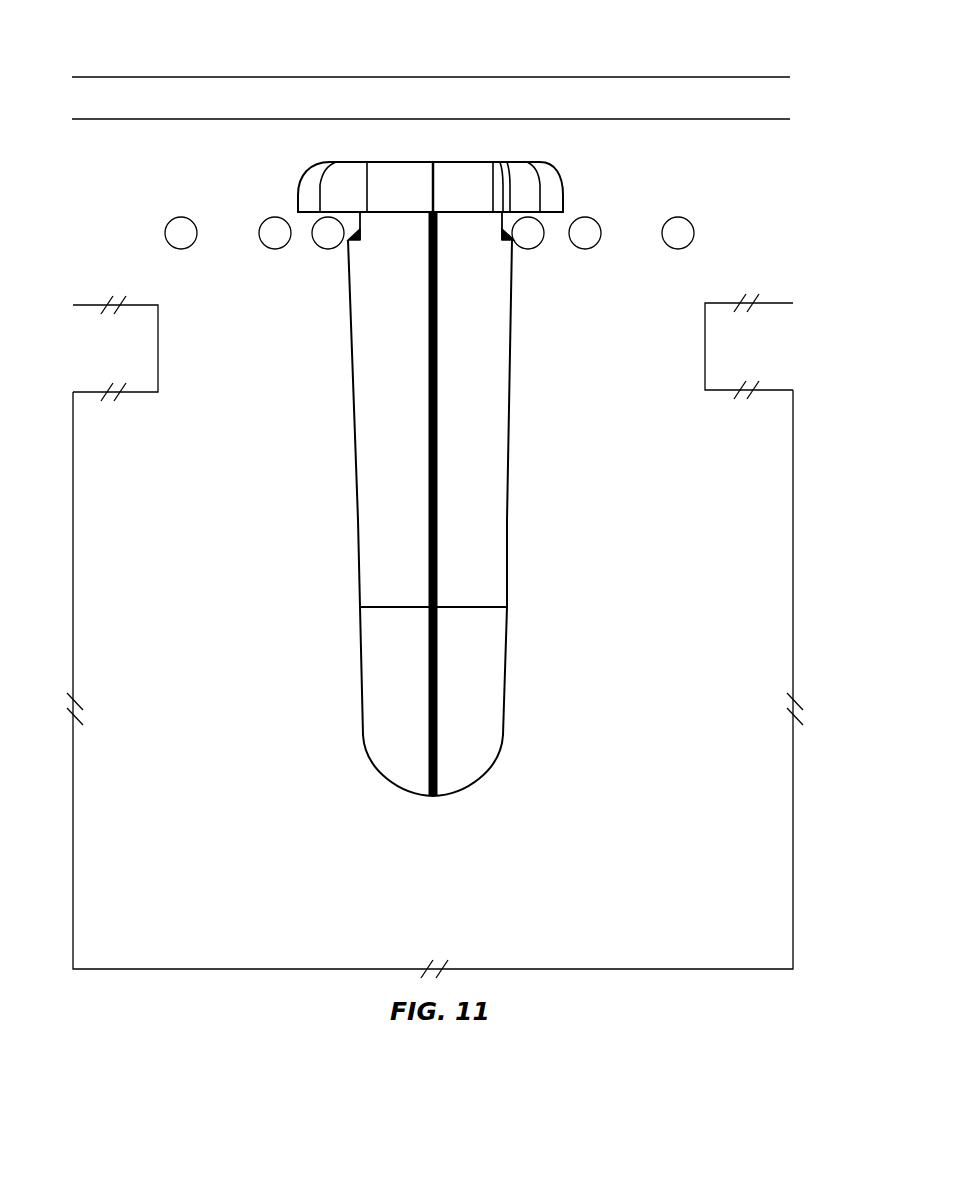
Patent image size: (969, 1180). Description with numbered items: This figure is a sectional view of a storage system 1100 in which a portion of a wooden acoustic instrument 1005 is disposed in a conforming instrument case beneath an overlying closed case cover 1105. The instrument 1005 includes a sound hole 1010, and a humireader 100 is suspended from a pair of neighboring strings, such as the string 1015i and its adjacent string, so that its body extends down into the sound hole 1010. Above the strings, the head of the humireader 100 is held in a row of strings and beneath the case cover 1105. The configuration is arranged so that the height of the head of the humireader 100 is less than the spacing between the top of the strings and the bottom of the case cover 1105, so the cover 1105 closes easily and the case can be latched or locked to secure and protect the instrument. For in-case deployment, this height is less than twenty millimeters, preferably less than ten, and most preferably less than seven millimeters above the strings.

The storage system 1100 is at (435, 496).
The case cover 1105 is at (452, 105).
The wooden acoustic instrument 1005 is at (148, 305).
The sound hole 1010 is at (612, 425).
The string 1015i is at (330, 232).
The humireader 100 is at (387, 732).